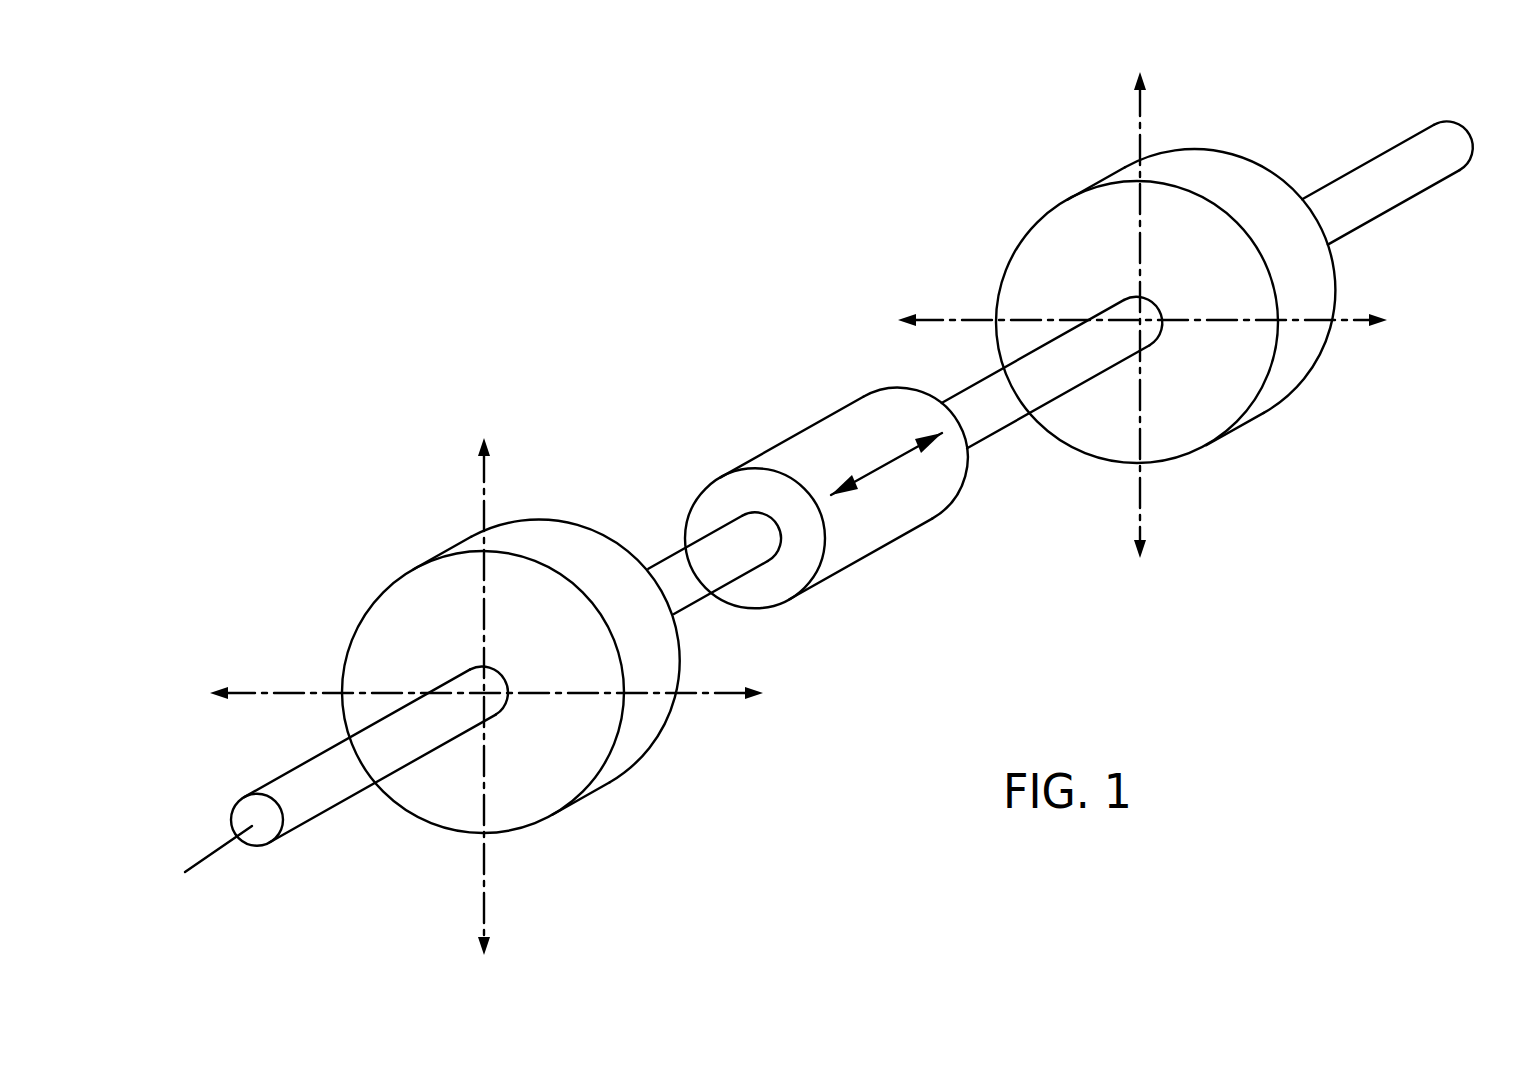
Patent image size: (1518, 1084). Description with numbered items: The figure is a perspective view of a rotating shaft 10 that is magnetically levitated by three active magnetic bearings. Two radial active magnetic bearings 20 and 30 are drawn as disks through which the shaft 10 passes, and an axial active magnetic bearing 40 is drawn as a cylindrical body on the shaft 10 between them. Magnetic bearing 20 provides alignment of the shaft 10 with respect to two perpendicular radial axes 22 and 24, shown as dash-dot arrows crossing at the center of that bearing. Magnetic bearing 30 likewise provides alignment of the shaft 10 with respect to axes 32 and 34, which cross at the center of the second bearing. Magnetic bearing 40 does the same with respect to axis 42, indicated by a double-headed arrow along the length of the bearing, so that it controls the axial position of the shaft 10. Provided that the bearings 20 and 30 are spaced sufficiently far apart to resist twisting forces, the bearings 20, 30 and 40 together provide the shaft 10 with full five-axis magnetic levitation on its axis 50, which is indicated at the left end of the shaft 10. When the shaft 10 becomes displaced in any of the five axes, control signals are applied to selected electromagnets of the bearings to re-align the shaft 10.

The shaft 10 is at (1420, 193).
The radial active magnetic bearing 20 is at (652, 747).
The axis 22 is at (487, 505).
The axis 24 is at (708, 693).
The radial active magnetic bearing 30 is at (1310, 370).
The axis 32 is at (1142, 130).
The axis 34 is at (1363, 320).
The axial active magnetic bearing 40 is at (768, 452).
The axis 42 is at (885, 465).
The axis 50 is at (212, 853).